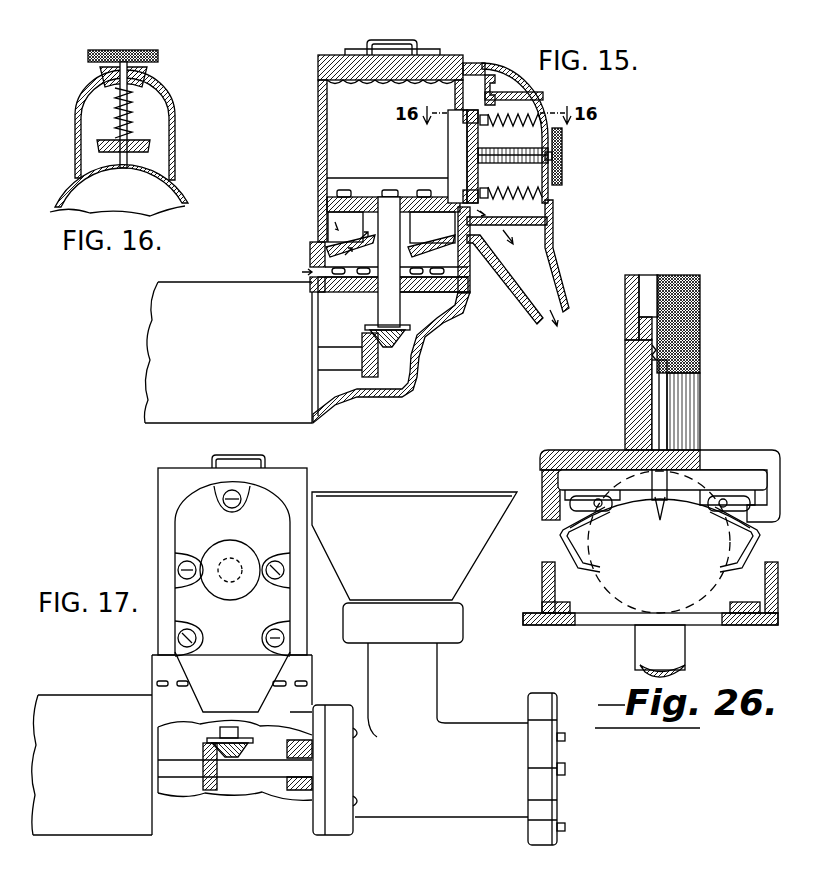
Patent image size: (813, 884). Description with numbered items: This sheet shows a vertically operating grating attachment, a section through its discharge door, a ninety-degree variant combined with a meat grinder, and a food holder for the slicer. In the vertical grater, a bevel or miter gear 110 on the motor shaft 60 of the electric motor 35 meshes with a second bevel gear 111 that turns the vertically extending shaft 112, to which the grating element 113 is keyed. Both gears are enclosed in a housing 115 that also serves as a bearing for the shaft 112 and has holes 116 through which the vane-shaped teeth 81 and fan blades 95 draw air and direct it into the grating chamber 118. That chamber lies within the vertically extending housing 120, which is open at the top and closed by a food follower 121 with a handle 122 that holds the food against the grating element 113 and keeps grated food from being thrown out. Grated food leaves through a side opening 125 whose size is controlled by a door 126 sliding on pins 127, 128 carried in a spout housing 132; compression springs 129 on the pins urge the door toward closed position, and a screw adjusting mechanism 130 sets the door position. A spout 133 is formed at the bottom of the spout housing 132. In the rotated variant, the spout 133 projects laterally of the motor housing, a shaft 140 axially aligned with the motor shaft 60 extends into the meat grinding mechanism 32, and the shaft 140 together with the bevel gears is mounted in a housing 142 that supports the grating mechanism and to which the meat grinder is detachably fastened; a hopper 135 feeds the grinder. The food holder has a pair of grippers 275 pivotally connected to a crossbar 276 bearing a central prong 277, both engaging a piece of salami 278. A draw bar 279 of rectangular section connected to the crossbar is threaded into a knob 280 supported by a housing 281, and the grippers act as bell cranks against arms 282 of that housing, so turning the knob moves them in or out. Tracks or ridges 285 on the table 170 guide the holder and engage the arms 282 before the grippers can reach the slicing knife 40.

In FIG. 16, the screw adjusting mechanism 130 is at (88, 55).
In FIG. 15, the screw adjusting mechanism 130 is at (563, 156).
In FIG. 17, the screw adjusting mechanism 130 is at (210, 560).
In FIG. 16, the spout housing 132 is at (77, 108).
In FIG. 15, the spout housing 132 is at (528, 103).
In FIG. 17, the spout housing 132 is at (190, 527).
In FIG. 16, the pin 128 is at (133, 95).
In FIG. 15, the pin 128 is at (482, 110).
In FIG. 16, the compression springs 129 is at (131, 112).
In FIG. 15, the compression springs 129 is at (528, 212).
In FIG. 16, the door 126 is at (110, 145).
In FIG. 15, the door 126 is at (478, 143).
In FIG. 16, the side opening 125 is at (133, 173).
In FIG. 15, the side opening 125 is at (453, 137).
In FIG. 16, the vertically extending housing 120 is at (185, 197).
In FIG. 15, the vertically extending housing 120 is at (318, 164).
In FIG. 16, the grating chamber 118 is at (57, 202).
In FIG. 15, the grating chamber 118 is at (332, 123).
In FIG. 15, the handle 122 is at (385, 45).
In FIG. 17, the handle 122 is at (262, 457).
In FIG. 15, the food follower or pusher 121 is at (443, 65).
In FIG. 15, the grating element 113 is at (369, 196).
In FIG. 15, the cutting or grating teeth 81 is at (397, 196).
In FIG. 15, the fan blades or vanes 95 is at (431, 234).
In FIG. 15, the vertically extending shaft 112 is at (385, 312).
In FIG. 15, the holes 116 is at (472, 272).
In FIG. 15, the housing 115 is at (418, 387).
In FIG. 15, the second bevel or miter gear 111 is at (402, 340).
In FIG. 17, the second bevel or miter gear 111 is at (253, 743).
In FIG. 15, the bevel or miter gear 110 is at (373, 375).
In FIG. 17, the bevel or miter gear 110 is at (205, 780).
In FIG. 15, the motor shaft 60 is at (342, 357).
In FIG. 17, the motor shaft 60 is at (182, 768).
In FIG. 15, the pin 127 is at (545, 196).
In FIG. 15, the spout 133 is at (568, 298).
In FIG. 17, the spout 133 is at (215, 690).
In FIG. 15, the electric motor 35 is at (186, 418).
In FIG. 17, the electric motor 35 is at (88, 825).
In FIG. 17, the shaft 140 is at (262, 768).
In FIG. 17, the housing 142 is at (295, 828).
In FIG. 17, the funnel 135 is at (462, 568).
In FIG. 17, the meat grinding mechanism 32 is at (456, 829).
In FIG. 26, the housing 281 is at (627, 398).
In FIG. 26, the draw bar 279 is at (665, 420).
In FIG. 26, the knob 280 is at (700, 277).
In FIG. 26, the crossbar 276 is at (692, 472).
In FIG. 26, the arms 282 is at (661, 492).
In FIG. 26, the grippers 275 is at (560, 547).
In FIG. 26, the prong 277 is at (653, 518).
In FIG. 26, the salami 278 is at (633, 592).
In FIG. 26, the tracks or ridges 285 is at (542, 585).
In FIG. 26, the slicing knife 40 is at (705, 628).
In FIG. 26, the table 170 is at (532, 627).